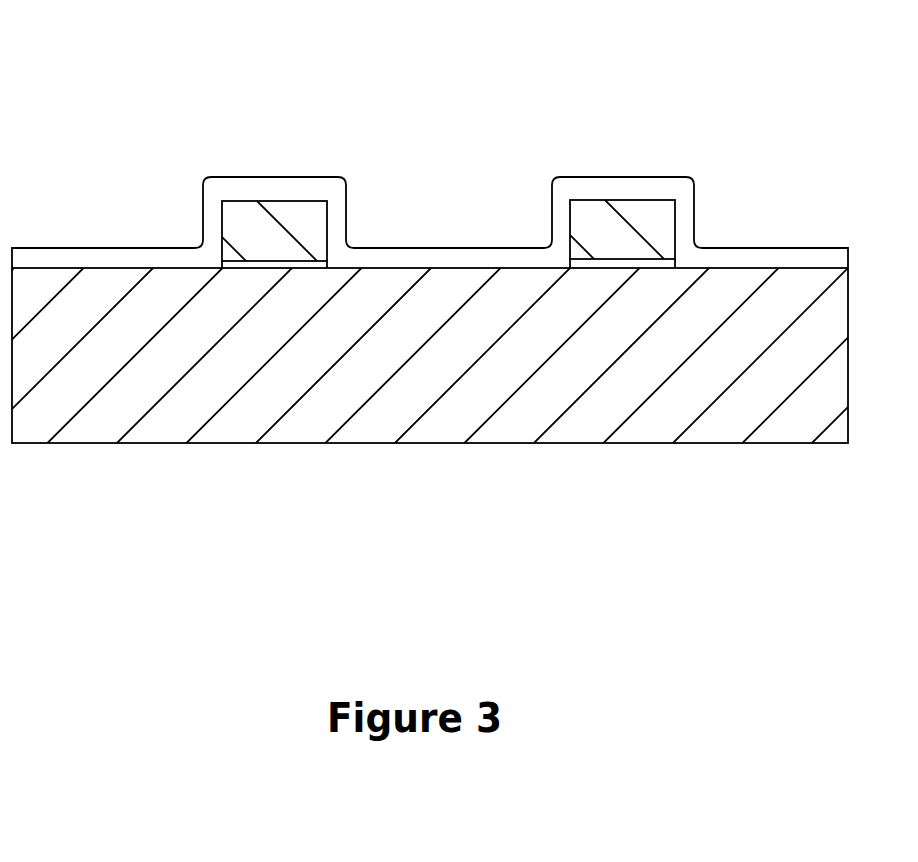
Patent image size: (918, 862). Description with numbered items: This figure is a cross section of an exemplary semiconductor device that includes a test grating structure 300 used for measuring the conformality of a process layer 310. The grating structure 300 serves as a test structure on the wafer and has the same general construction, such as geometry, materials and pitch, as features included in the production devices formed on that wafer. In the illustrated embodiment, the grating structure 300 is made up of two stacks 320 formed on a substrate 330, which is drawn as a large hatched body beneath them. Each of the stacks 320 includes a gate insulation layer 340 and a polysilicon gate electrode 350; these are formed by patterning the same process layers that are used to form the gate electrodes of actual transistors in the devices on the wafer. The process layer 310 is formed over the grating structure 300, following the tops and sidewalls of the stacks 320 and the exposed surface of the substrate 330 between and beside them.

The grating structure 300 is at (459, 257).
The process layer 310 is at (100, 262).
The stacks 320 is at (452, 161).
The substrate 330 is at (465, 407).
The gate insulation layer 340 is at (343, 247).
The polysilicon gate electrode 350 is at (308, 237).